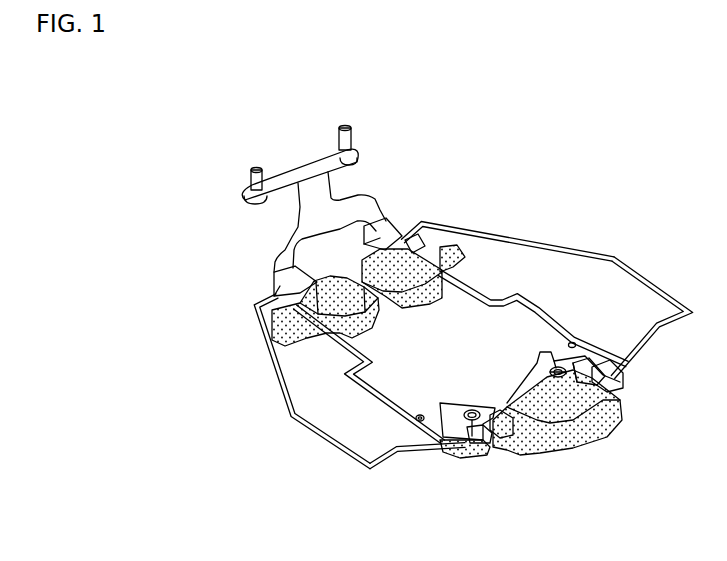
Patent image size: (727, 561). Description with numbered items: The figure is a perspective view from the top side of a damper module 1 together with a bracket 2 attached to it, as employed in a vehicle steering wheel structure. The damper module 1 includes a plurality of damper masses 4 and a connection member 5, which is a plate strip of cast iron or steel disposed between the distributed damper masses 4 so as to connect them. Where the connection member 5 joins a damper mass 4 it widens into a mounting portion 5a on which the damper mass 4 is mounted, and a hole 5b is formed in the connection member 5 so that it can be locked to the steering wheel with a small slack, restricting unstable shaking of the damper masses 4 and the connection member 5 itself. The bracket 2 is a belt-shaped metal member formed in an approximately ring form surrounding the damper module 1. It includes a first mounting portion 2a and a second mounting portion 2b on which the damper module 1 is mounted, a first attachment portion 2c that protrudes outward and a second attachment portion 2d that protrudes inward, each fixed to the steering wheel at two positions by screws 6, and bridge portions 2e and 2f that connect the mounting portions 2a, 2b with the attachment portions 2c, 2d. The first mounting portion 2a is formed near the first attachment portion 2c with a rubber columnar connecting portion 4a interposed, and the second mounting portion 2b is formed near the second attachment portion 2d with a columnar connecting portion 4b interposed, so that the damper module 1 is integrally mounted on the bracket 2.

The damper module 1 is at (519, 262).
The bracket 2 is at (467, 307).
The first mounting portion 2a is at (390, 230).
The second mounting portion 2b is at (588, 358).
The first attachment portion 2c is at (300, 160).
The second attachment portion 2d is at (443, 437).
The bridge portion 2e is at (573, 247).
The bridge portion 2f is at (327, 443).
The damper mass 4 is at (432, 340).
The columnar connecting portion 4a is at (300, 300).
The columnar connecting portion 4b is at (530, 450).
The connection member 5 is at (429, 380).
The mounting portion 5a is at (445, 310).
The hole 5b is at (420, 414).
The screw 6 is at (363, 160).